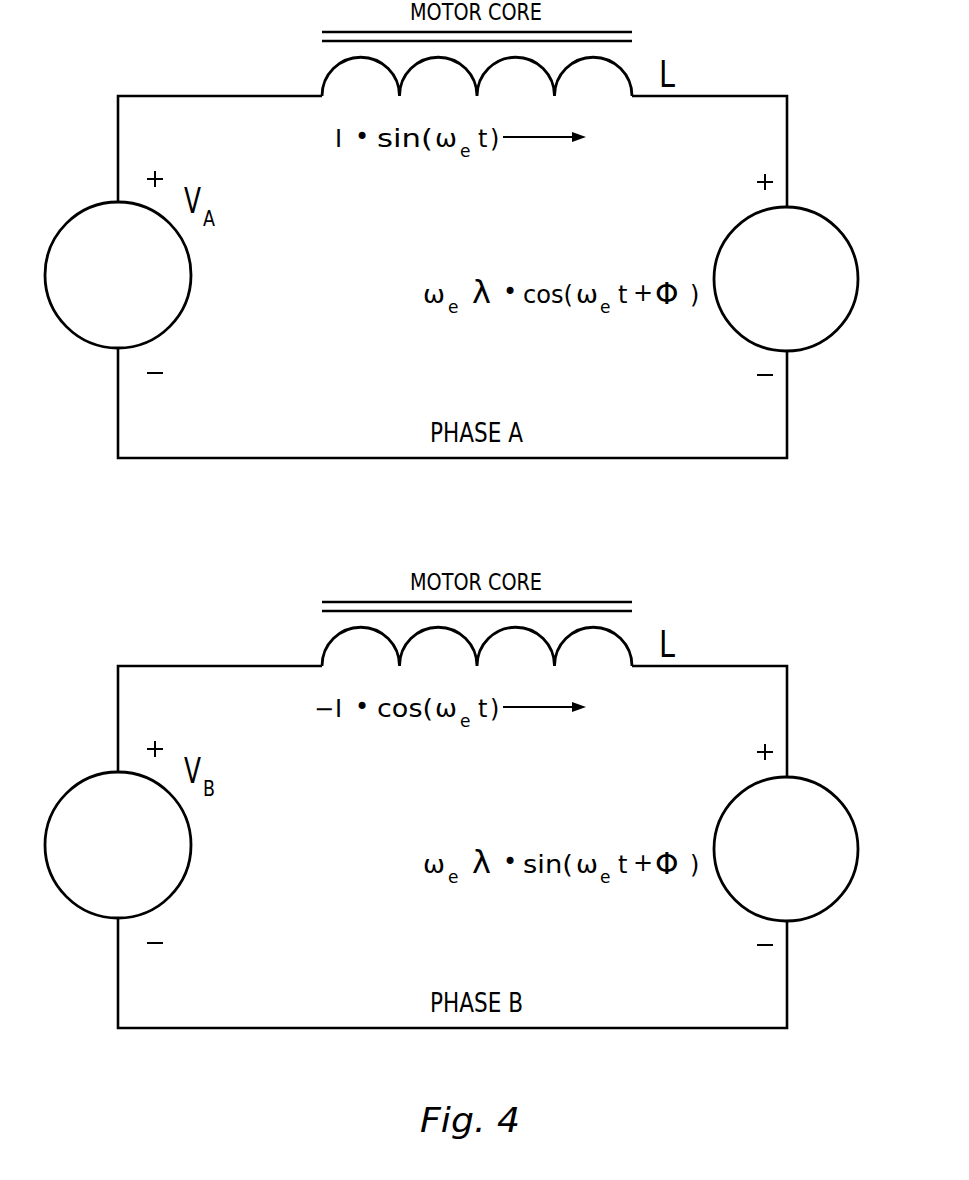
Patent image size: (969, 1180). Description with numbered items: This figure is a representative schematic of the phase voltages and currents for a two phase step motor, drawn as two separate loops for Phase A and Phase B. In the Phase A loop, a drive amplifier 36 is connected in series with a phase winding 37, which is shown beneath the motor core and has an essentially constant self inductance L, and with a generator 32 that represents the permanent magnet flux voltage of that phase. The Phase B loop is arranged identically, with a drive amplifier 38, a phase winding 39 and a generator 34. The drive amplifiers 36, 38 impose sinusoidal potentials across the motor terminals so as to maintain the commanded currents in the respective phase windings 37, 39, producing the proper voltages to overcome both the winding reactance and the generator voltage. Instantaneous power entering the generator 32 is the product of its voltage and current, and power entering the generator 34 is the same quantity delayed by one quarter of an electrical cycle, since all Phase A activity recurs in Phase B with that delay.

The generator 32 is at (828, 199).
The generator 34 is at (794, 802).
The drive amplifier 36 is at (52, 210).
The phase winding 37 is at (298, 63).
The drive amplifier 38 is at (109, 793).
The phase winding 39 is at (423, 627).